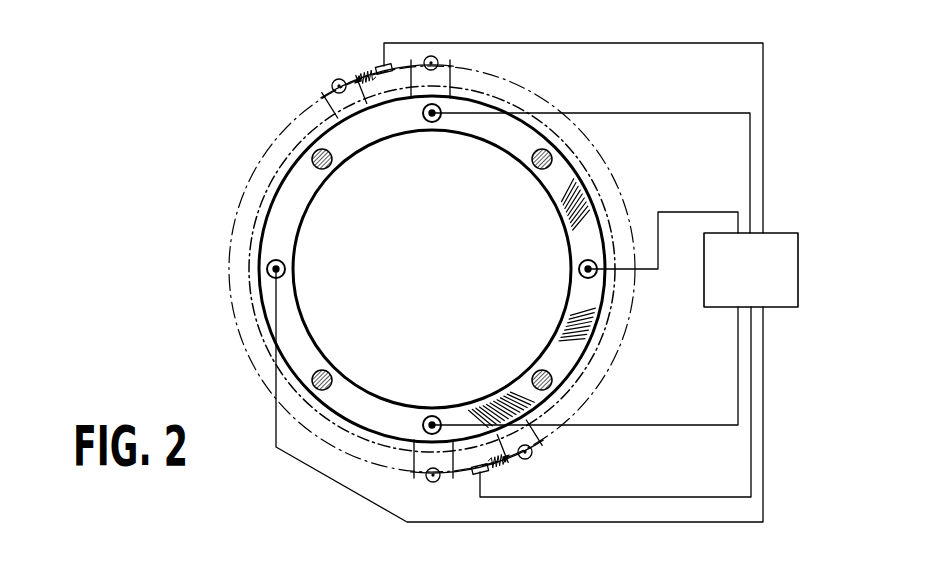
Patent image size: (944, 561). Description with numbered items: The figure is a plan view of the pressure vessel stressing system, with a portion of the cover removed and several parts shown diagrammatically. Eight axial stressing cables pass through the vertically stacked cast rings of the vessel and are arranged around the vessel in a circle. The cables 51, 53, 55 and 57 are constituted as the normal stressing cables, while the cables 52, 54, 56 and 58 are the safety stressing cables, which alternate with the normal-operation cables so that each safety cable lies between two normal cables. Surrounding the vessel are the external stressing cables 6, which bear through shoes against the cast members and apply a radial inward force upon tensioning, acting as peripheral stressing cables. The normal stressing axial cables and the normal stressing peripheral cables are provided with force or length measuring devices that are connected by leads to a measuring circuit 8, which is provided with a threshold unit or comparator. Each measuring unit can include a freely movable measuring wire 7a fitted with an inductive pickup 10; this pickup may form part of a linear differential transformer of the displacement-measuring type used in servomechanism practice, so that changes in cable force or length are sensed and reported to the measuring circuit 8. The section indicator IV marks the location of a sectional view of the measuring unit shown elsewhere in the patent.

The axial stressing cable 51 is at (436, 124).
The safety stressing cable 52 is at (534, 165).
The axial stressing cable 53 is at (578, 269).
The safety stressing cable 54 is at (538, 371).
The axial stressing cable 55 is at (433, 415).
The safety stressing cable 56 is at (332, 378).
The axial stressing cable 57 is at (286, 269).
The safety stressing cable 58 is at (330, 168).
The external stressing cable 6 is at (259, 207).
The measuring wire 7a is at (291, 121).
The measuring circuit 8 is at (760, 287).
The inductive pickup 10 is at (367, 62).
The section line IV is at (320, 56).